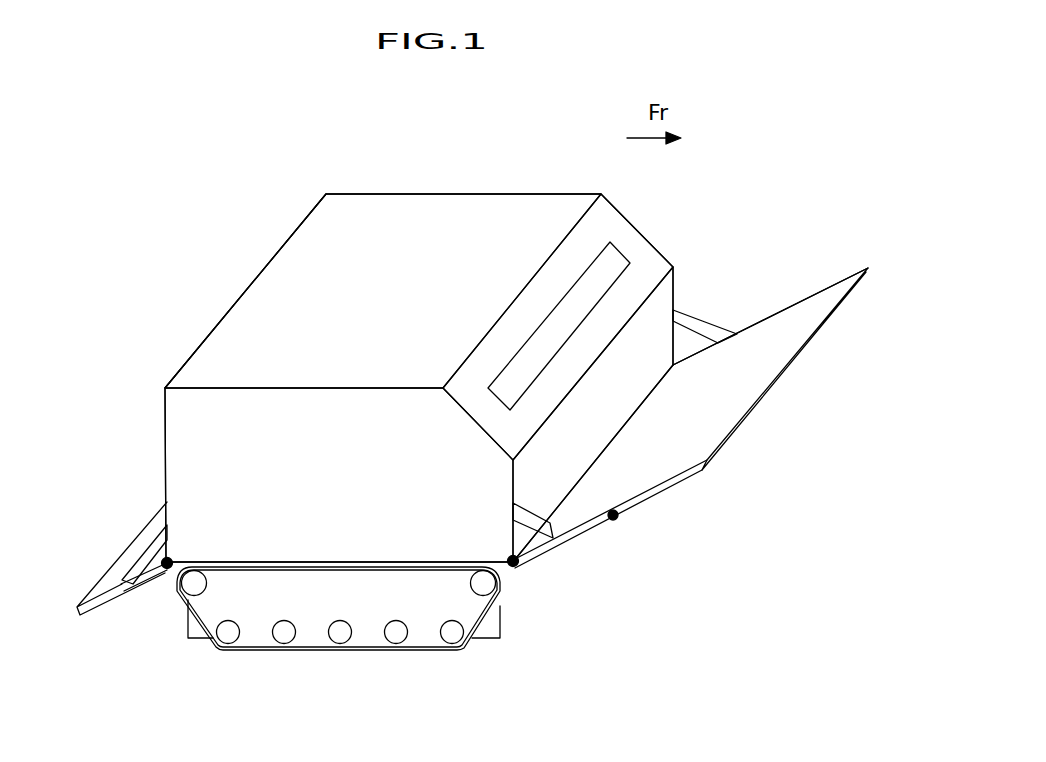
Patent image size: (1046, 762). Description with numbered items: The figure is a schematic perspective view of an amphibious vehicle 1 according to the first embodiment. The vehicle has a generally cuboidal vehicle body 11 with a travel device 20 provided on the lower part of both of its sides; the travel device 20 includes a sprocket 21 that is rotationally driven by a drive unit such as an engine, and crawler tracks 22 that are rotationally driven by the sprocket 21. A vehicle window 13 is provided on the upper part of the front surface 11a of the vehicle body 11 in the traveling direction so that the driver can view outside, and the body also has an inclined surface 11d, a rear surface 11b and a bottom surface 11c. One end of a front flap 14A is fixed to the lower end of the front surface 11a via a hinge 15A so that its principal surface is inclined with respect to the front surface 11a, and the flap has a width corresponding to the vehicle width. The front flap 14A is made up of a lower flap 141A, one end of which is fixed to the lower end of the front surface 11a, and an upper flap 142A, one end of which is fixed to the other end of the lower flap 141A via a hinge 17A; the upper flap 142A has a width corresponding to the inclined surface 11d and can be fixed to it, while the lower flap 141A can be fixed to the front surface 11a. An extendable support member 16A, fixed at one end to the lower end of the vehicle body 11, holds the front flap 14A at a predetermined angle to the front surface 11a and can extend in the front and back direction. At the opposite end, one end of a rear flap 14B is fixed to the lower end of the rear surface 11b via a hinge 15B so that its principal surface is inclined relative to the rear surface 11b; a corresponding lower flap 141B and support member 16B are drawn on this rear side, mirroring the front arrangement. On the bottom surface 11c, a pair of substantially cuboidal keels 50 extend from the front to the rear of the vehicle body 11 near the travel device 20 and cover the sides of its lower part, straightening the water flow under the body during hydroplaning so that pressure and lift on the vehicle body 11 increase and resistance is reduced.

The amphibious vehicle 1 is at (521, 145).
The vehicle body 11 is at (402, 193).
The front surface 11a is at (663, 299).
The rear surface 11b is at (240, 297).
The bottom surface 11c is at (304, 575).
The inclined surface 11d is at (611, 215).
The vehicle window 13 is at (623, 258).
The front flap 14A is at (690, 487).
The rear flap 14B is at (103, 575).
The lower flap 141A is at (602, 530).
The support bar of left platform 141B is at (144, 577).
The upper flap 142A is at (784, 324).
The hinge 15A is at (509, 568).
The hinge 15B is at (155, 582).
The support member 16A is at (710, 322).
The left support member 16B is at (152, 548).
The hinge 17A is at (617, 521).
The travel device 20 is at (447, 668).
The sprocket 21 is at (485, 590).
The crawler tracks 22 is at (372, 653).
The keels 50 is at (503, 634).